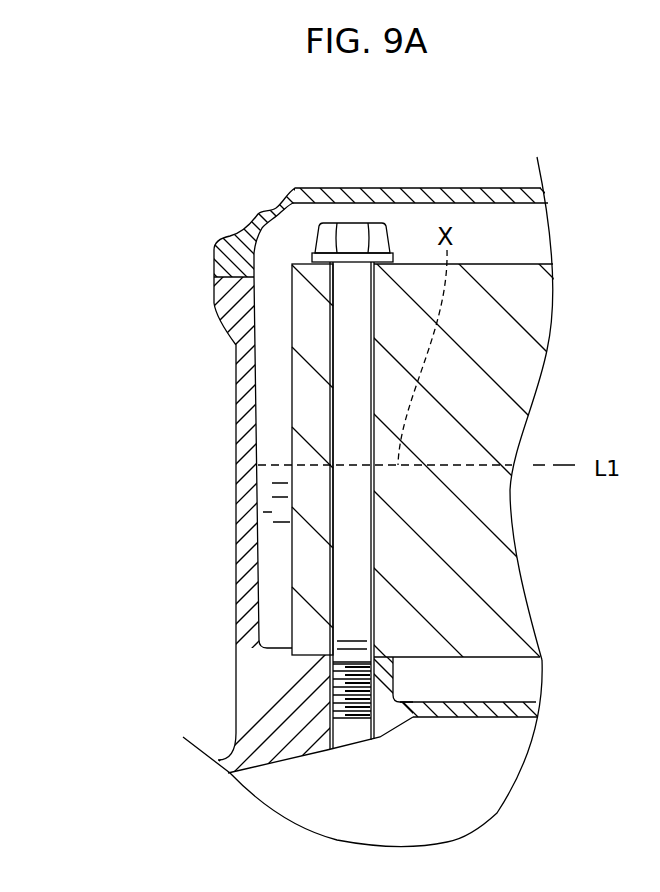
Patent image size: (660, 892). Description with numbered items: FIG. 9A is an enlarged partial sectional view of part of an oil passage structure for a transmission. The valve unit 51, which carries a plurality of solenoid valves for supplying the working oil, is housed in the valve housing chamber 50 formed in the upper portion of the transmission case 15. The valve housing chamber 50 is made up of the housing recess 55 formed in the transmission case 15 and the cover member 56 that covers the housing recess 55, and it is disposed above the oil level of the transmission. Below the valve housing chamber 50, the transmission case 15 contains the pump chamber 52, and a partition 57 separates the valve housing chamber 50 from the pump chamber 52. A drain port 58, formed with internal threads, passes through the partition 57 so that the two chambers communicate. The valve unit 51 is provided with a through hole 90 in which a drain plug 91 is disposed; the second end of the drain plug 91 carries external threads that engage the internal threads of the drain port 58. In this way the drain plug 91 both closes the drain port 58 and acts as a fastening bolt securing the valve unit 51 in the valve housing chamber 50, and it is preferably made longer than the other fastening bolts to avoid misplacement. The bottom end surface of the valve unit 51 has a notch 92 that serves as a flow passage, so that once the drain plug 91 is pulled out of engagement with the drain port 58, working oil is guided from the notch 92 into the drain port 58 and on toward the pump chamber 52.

The transmission case 15 is at (330, 490).
The valve housing chamber 50 is at (518, 232).
The valve unit 51 is at (510, 318).
The pump chamber 52 is at (493, 763).
The housing recess 55 is at (257, 374).
The cover member 56 is at (477, 197).
The partition 57 is at (430, 710).
The drain port 58 is at (350, 737).
The through hole 90 is at (333, 300).
The drain plug 91 is at (353, 240).
The notch 92 is at (308, 652).